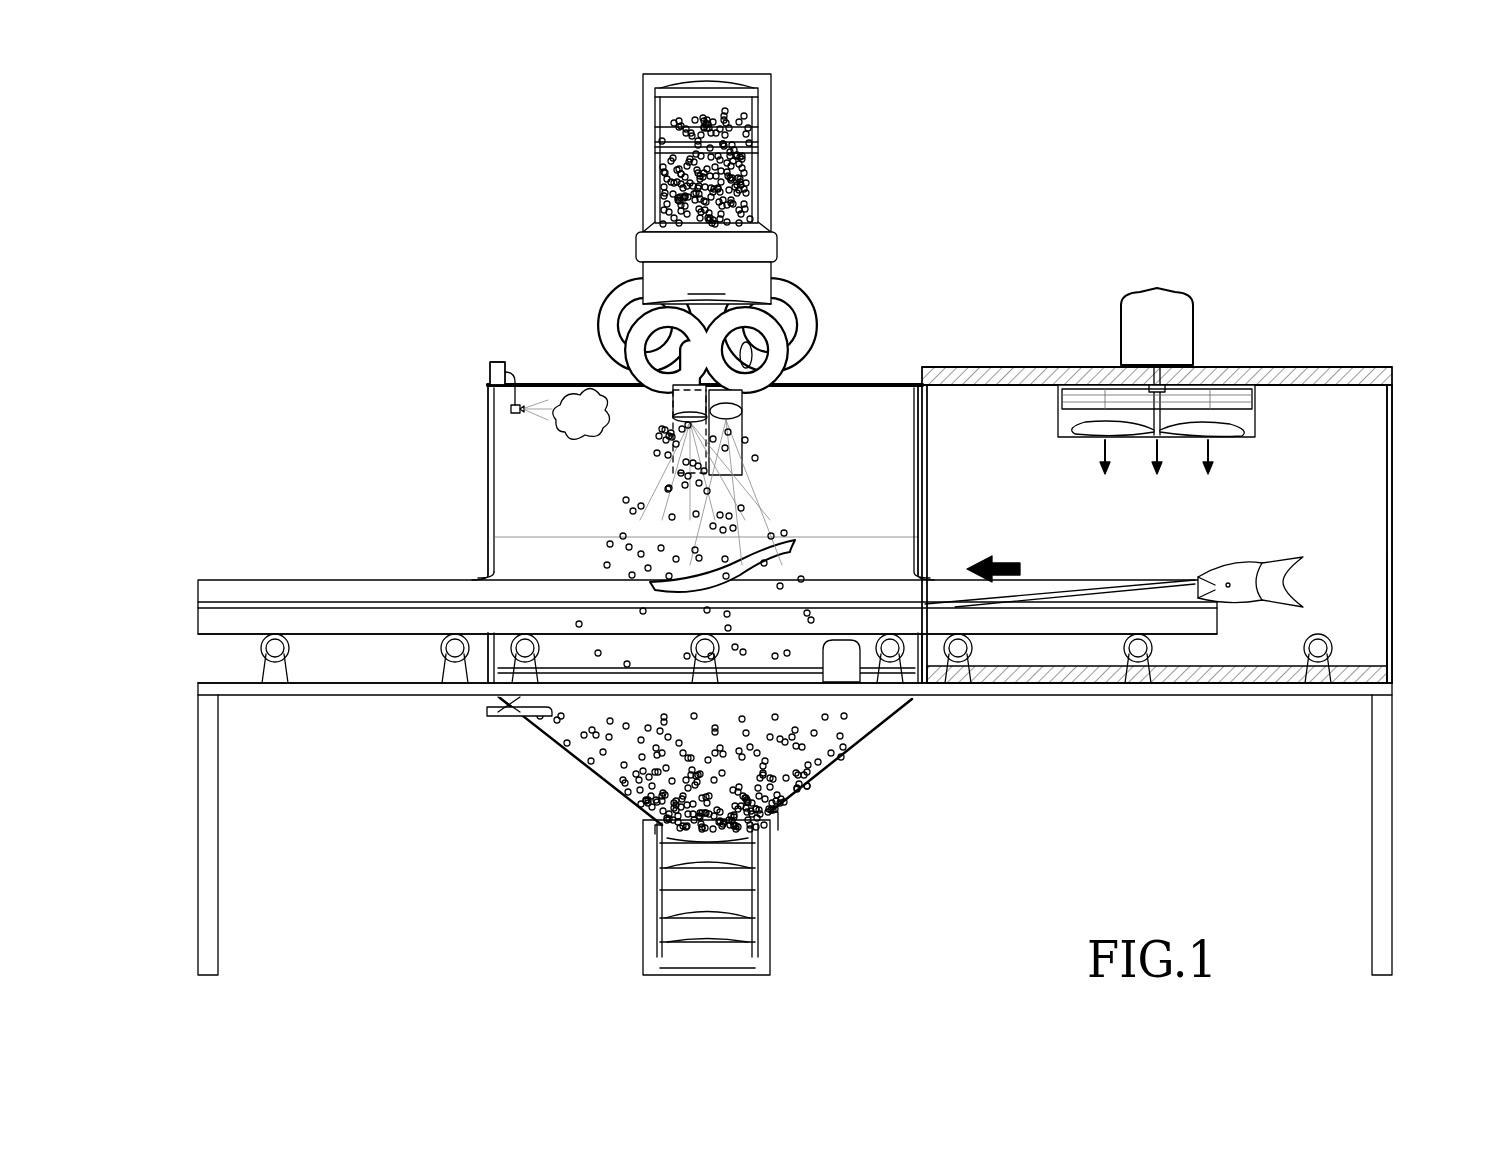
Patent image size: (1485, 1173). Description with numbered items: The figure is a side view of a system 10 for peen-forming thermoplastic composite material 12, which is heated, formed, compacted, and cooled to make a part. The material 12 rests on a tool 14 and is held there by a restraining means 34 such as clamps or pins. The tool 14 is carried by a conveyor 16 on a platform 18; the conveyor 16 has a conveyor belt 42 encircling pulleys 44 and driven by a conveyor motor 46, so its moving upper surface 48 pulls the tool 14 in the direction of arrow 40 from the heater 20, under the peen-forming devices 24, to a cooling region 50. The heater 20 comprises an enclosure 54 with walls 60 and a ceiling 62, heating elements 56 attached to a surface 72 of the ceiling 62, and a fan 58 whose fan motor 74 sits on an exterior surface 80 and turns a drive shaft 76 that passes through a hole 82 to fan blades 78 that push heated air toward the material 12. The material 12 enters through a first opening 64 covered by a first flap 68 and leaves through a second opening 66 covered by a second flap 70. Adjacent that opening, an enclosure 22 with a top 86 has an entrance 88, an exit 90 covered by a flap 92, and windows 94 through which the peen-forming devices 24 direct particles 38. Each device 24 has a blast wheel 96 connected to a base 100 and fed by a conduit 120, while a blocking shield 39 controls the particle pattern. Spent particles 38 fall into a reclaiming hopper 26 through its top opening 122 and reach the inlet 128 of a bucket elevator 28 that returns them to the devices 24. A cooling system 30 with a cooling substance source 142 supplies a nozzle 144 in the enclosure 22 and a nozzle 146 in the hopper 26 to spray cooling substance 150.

The system 10 is at (1195, 172).
The thermoplastic composite material 12 is at (1045, 582).
The tool 14 is at (1208, 622).
The conveyor 16 is at (185, 662).
The platform 18 is at (1395, 690).
The heater 20 is at (1296, 270).
The enclosure 22 is at (893, 368).
The peen-forming device 24 is at (582, 226).
The reclaiming hopper 26 is at (650, 782).
The bucket elevator 28 is at (641, 96).
The cooling system 30 is at (480, 347).
The restraining means 34 is at (1230, 572).
The particles 38 is at (660, 215).
The blocking shield 39 is at (778, 540).
The arrow 40 is at (1000, 570).
The conveyor belt 42 is at (785, 675).
The pulleys 44 is at (515, 648).
The conveyor motor 46 is at (858, 686).
The upper surface 48 is at (560, 630).
The cooling region 50 is at (265, 552).
The enclosure 54 is at (1318, 370).
The heating elements 56 is at (1100, 392).
The fan 58 is at (1120, 290).
The walls 60 is at (1394, 396).
The ceiling 62 is at (1375, 372).
The first opening 64 is at (1394, 463).
The second opening 66 is at (930, 466).
The first flap 68 is at (1387, 588).
The second flap 70 is at (920, 518).
The surface 72 is at (1328, 388).
The fan motor 74 is at (1195, 316).
The drive shaft 76 is at (1162, 395).
The fan blades 78 is at (1075, 428).
The exterior surface 80 is at (988, 370).
The hole 82 is at (1150, 365).
The top 86 is at (838, 385).
The entrance 88 is at (912, 446).
The exit 90 is at (472, 442).
The flap 92 is at (488, 516).
The windows 94 is at (664, 455).
The blast wheel 96 is at (632, 322).
The base 100 is at (707, 283).
The conduit 120 is at (618, 288).
The top opening 122 is at (500, 700).
The inlet 128 is at (755, 836).
The cooling substance source 142 is at (488, 372).
The nozzle 144 is at (516, 368).
The nozzle 146 is at (530, 720).
The cooling substance 150 is at (555, 440).